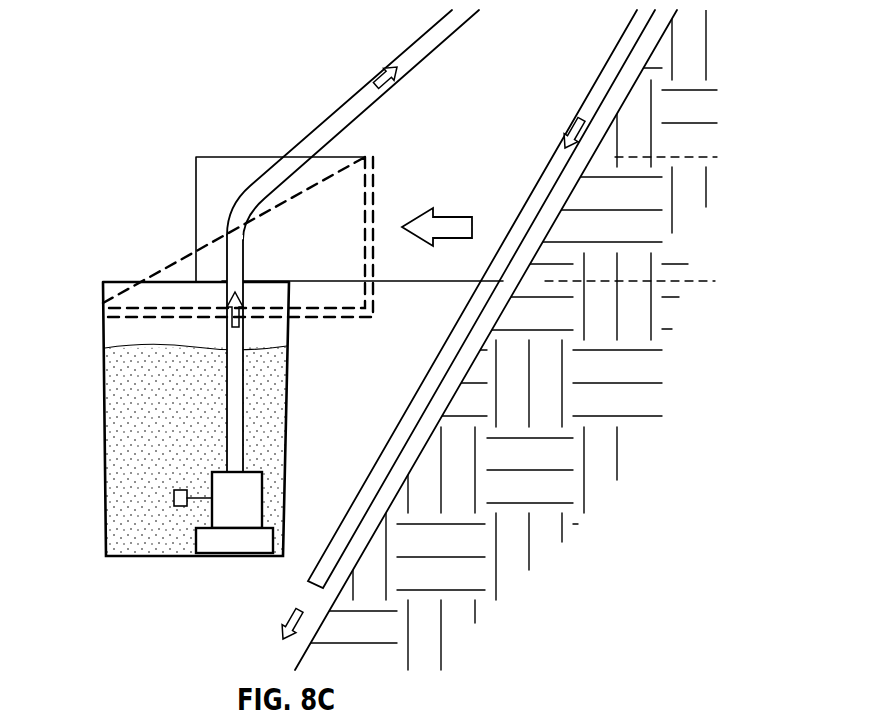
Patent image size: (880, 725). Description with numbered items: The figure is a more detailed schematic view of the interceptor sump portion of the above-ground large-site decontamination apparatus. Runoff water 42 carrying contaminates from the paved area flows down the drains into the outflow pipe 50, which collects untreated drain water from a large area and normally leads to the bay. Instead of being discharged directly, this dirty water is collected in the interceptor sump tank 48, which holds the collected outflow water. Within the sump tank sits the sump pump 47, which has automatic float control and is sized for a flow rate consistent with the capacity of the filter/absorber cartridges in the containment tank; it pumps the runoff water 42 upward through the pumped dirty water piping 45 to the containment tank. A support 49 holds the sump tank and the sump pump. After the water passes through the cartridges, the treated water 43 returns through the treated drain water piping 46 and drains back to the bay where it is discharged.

The runoff water 42 is at (384, 70).
The treated water 43 is at (572, 128).
The pumped dirty water piping 45 is at (343, 102).
The treated drain water piping 46 is at (593, 93).
The sump pump 47 is at (235, 562).
The interceptor sump tank 48 is at (105, 469).
The support 49 is at (375, 310).
The outflow pipe 50 is at (196, 157).